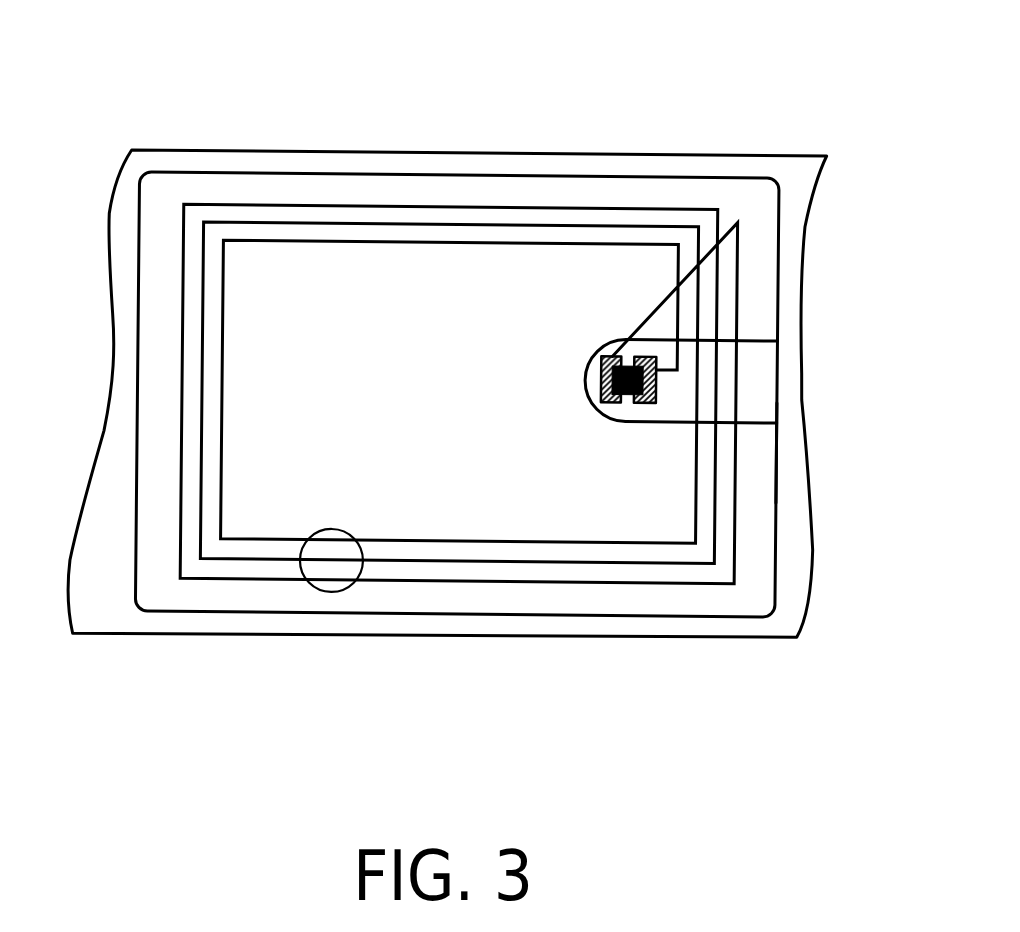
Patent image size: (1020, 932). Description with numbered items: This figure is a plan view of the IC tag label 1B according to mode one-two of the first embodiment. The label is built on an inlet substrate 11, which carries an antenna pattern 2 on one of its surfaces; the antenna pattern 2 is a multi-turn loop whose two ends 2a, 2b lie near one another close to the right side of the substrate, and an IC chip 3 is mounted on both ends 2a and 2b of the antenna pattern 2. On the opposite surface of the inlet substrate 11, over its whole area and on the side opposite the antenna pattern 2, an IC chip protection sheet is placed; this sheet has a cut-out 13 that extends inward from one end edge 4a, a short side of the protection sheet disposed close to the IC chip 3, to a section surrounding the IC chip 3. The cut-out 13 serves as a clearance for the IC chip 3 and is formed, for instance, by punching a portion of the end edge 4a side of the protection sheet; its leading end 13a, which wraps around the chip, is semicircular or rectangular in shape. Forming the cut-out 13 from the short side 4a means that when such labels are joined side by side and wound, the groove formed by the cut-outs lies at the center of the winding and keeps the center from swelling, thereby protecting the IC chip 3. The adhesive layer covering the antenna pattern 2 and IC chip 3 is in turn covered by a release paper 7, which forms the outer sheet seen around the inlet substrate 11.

The IC tag label 1B is at (452, 131).
The antenna pattern 2 is at (334, 594).
The end of antenna pattern 2a is at (595, 392).
The end of antenna pattern 2b is at (660, 391).
The IC chip 3 is at (628, 395).
The one end edge 4a is at (776, 445).
The release paper 7 is at (685, 636).
The inlet substrate 11 is at (776, 544).
The cut-out 13 is at (756, 335).
The leading end of cut-out 13a is at (597, 346).